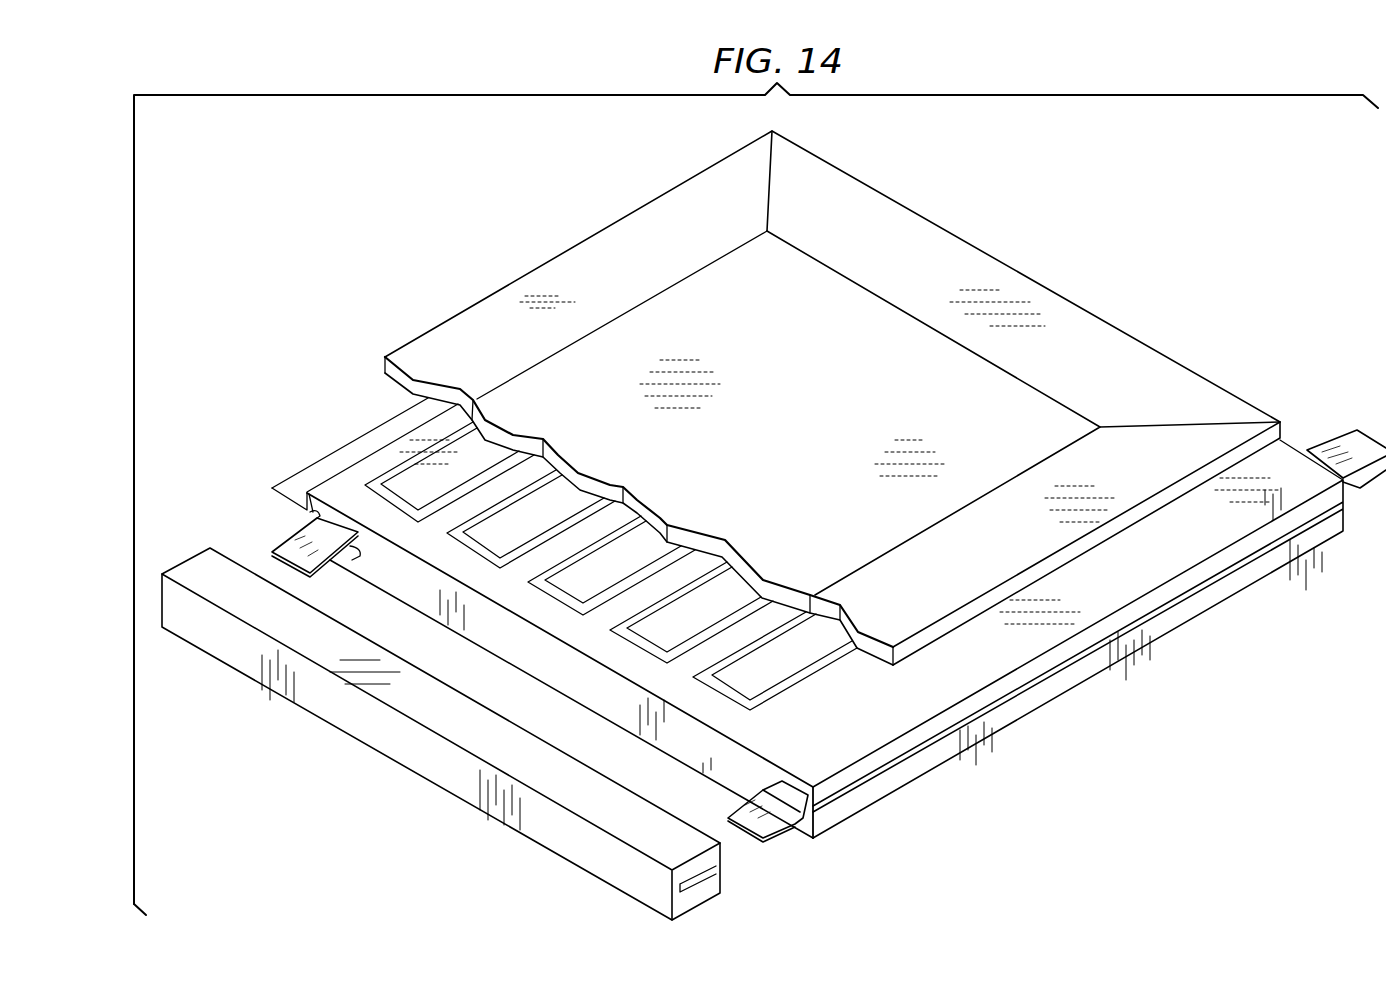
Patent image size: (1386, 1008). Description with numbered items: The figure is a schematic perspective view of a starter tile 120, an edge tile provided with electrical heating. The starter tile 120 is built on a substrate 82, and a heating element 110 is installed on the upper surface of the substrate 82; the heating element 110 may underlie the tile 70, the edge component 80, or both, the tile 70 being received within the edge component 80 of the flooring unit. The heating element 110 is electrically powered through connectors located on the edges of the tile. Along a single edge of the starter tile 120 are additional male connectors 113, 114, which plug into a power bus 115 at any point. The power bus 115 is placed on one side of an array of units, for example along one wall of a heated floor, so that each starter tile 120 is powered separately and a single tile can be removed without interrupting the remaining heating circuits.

The starter tile 120 is at (576, 216).
The tile 70 is at (886, 338).
The edge component 80 is at (1034, 312).
The substrate 82 is at (838, 750).
The heating element 110 is at (820, 668).
The male connector 113 is at (784, 836).
The male connector 114 is at (292, 536).
The power bus 115 is at (390, 740).